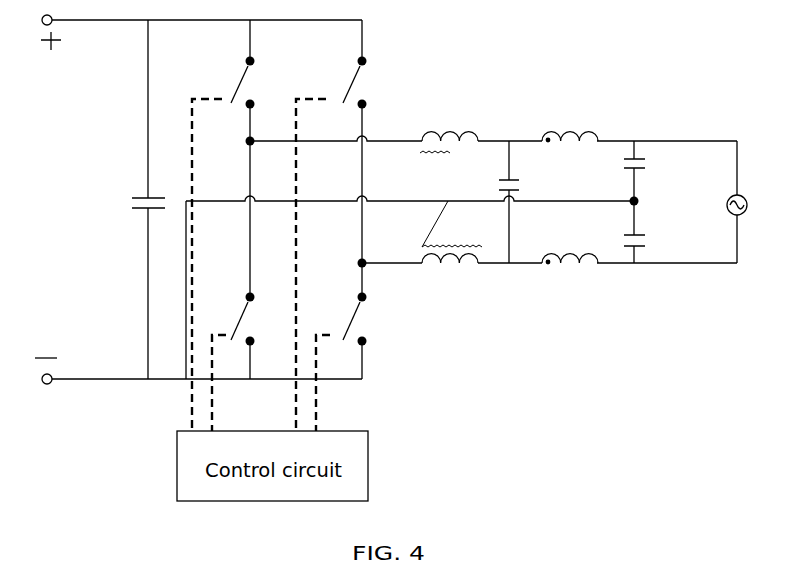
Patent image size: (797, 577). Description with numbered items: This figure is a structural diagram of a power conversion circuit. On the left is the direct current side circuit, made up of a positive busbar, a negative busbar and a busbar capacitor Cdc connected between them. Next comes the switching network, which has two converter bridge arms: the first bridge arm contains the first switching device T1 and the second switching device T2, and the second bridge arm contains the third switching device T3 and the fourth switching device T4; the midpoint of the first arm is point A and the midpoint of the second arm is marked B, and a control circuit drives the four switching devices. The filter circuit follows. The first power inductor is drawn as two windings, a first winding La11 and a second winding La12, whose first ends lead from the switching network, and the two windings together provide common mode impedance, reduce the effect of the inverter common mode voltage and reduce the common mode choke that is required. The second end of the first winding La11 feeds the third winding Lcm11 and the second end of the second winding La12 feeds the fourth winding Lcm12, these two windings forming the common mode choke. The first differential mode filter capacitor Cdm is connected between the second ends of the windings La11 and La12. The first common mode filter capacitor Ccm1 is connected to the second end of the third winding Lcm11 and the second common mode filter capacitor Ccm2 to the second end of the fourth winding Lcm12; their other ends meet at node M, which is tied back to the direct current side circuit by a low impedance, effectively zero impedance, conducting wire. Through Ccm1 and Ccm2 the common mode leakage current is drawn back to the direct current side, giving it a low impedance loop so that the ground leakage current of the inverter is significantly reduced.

The first switching device T1 is at (233, 80).
The second switching device T2 is at (231, 260).
The third switching device T3 is at (343, 141).
The fourth switching device T4 is at (344, 321).
The point A of the switching network A is at (322, 147).
The node B (second bridge midpoint) B is at (379, 251).
The DC link capacitor Cdc is at (124, 199).
The first differential mode filter capacitor Cdm is at (534, 202).
The first winding La11 is at (449, 128).
The second winding La12 is at (452, 249).
The third winding Lcm11 is at (568, 123).
The fourth winding Lcm12 is at (570, 276).
The first common mode filter capacitor Ccm1 is at (664, 171).
The second common mode filter capacitor Ccm2 is at (664, 232).
The midpoint node M of common mode capacitors M is at (621, 215).